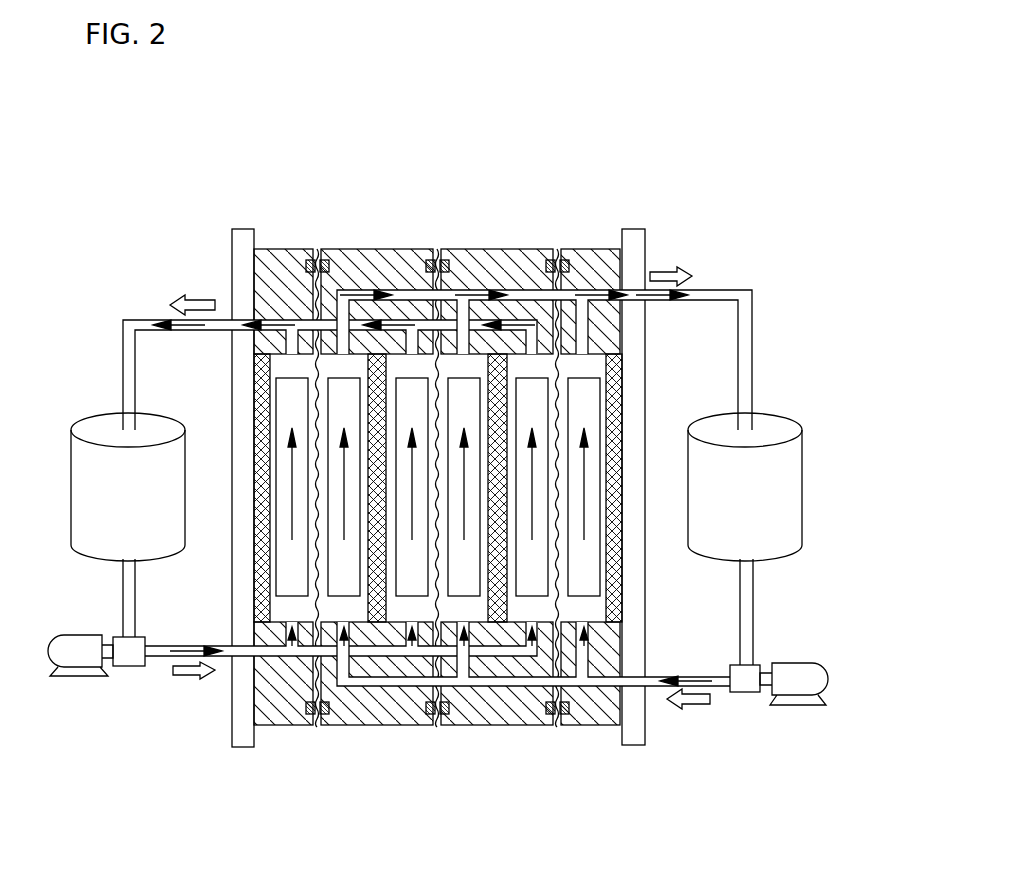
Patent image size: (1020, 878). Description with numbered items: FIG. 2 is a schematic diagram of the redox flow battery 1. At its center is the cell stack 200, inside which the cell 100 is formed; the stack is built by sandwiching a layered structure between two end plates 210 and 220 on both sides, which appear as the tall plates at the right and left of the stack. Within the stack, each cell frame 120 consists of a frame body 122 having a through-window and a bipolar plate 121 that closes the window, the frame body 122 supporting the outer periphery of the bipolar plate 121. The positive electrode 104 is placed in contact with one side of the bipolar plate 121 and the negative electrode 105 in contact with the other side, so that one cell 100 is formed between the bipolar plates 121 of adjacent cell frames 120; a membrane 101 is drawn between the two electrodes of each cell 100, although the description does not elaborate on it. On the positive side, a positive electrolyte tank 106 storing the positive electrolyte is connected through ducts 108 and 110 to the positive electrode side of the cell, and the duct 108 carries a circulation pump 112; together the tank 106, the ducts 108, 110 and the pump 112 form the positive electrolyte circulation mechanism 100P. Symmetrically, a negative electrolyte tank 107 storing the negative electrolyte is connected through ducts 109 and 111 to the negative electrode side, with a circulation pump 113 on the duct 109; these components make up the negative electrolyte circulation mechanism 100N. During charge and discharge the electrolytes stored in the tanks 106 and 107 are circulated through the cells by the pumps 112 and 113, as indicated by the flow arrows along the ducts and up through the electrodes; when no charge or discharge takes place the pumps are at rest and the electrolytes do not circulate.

The redox flow battery 1 is at (155, 176).
The cell stack 200 is at (443, 452).
The cell frame 120 is at (445, 413).
The bipolar plate 121 is at (622, 363).
The frame body 122 is at (268, 249).
The cell 100 is at (286, 630).
The membrane 101 is at (320, 632).
The positive electrode 104 is at (405, 558).
The negative electrode 105 is at (468, 553).
The positive electrolyte tank 106 is at (90, 420).
The negative electrolyte tank 107 is at (785, 425).
The duct 108 is at (163, 657).
The duct 109 is at (717, 687).
The duct 110 is at (140, 320).
The duct 111 is at (735, 289).
The circulation pump 112 is at (65, 640).
The circulation pump 113 is at (800, 668).
The positive electrolyte circulation mechanism 100P is at (110, 702).
The negative electrolyte circulation mechanism 100N is at (771, 718).
The end plate 210 is at (638, 735).
The end plate 220 is at (240, 735).